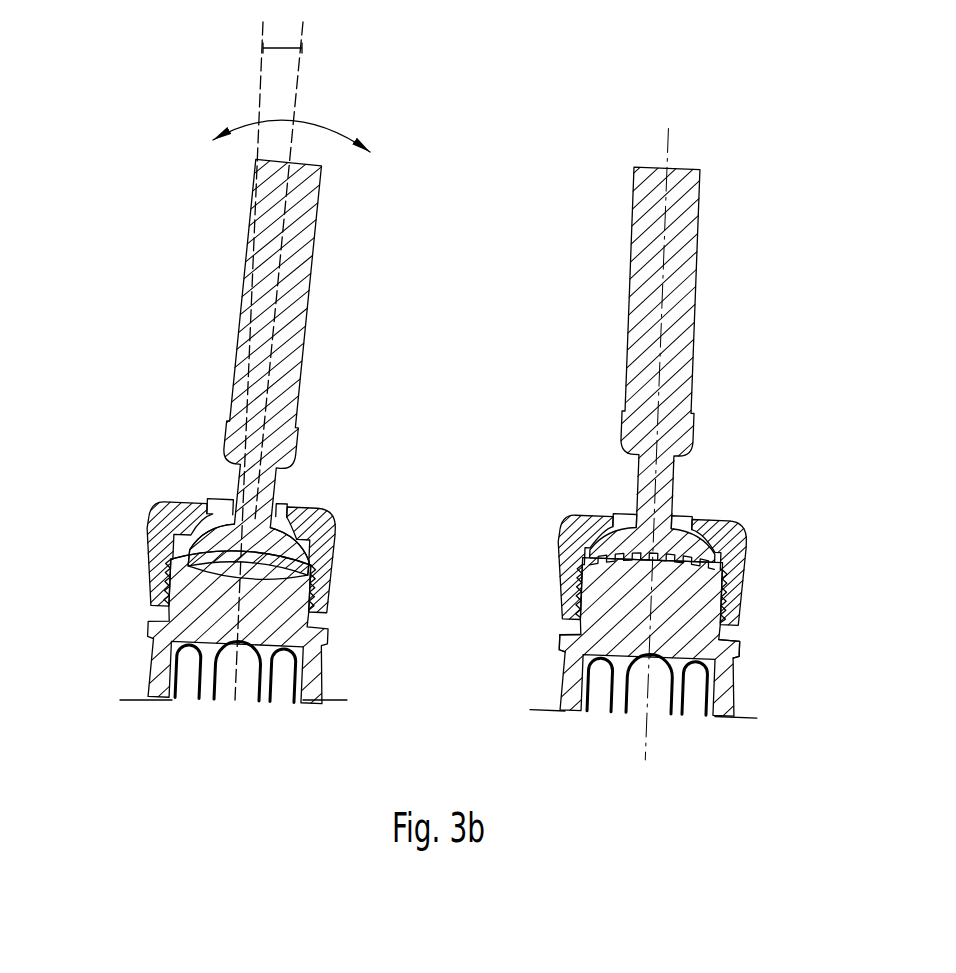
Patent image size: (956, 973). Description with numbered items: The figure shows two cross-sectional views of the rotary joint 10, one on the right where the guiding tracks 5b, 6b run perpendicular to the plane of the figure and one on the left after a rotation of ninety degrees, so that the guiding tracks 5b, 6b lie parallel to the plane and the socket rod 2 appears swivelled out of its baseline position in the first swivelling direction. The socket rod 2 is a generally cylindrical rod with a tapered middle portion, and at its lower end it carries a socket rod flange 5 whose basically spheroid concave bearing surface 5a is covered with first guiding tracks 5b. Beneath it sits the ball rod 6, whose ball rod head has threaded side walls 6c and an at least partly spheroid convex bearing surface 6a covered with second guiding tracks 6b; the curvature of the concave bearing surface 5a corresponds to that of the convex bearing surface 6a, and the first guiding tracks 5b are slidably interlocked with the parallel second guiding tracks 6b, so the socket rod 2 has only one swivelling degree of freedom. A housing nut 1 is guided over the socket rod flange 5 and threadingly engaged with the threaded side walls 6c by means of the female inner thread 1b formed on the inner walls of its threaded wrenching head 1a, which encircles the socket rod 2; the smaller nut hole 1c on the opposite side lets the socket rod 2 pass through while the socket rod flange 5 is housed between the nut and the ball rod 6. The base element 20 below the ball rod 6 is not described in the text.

The rotary joint 10 is at (168, 273).
The housing nut 1 is at (158, 498).
The threaded wrenching head 1a is at (748, 562).
The inner thread 1b is at (710, 610).
The nut hole 1c is at (683, 526).
The socket rod 2 is at (233, 383).
The socket rod flange 5 is at (294, 532).
The concave bearing surface 5a is at (316, 556).
The first guiding tracks 5b is at (620, 566).
The ball rod 6 is at (203, 586).
The convex bearing surface 6a is at (318, 590).
The second guiding tracks 6b is at (587, 546).
The threaded side walls 6c is at (733, 623).
The base skirt 20 is at (168, 672).